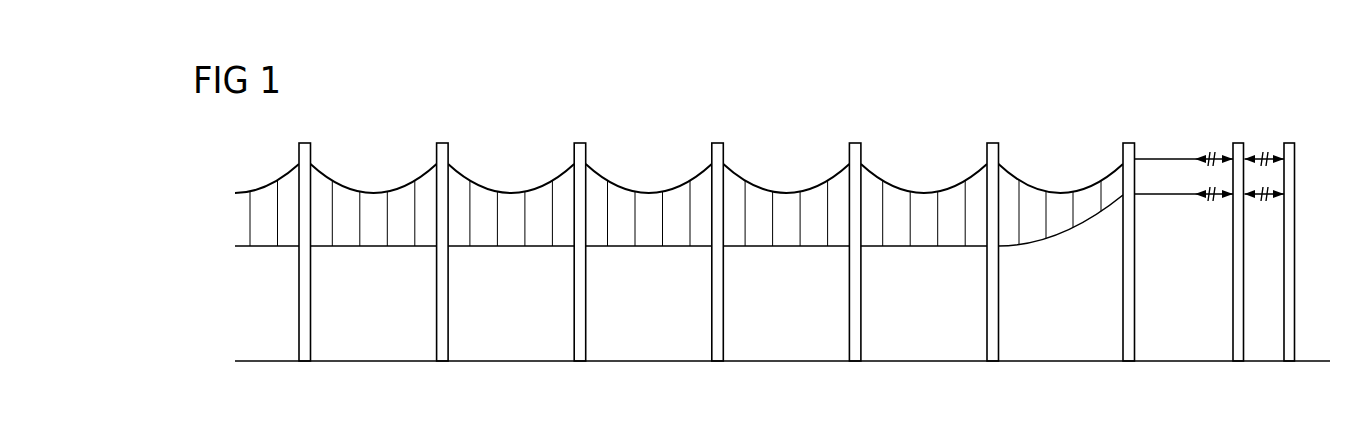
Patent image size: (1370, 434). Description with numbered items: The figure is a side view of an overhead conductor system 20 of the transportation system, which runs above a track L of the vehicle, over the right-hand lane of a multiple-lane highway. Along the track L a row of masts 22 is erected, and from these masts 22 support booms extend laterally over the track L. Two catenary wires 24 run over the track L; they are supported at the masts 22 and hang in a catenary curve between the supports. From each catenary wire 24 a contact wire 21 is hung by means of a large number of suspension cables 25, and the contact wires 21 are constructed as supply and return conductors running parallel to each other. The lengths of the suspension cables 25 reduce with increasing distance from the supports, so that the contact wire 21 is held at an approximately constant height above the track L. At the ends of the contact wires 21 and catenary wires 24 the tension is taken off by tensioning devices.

The overhead contact line system 20 is at (400, 138).
The contact wire 21 is at (482, 246).
The mast 22 is at (442, 334).
The catenary wire 24 is at (678, 182).
The dropper 25 is at (772, 232).
The tensioning section length L is at (1317, 361).